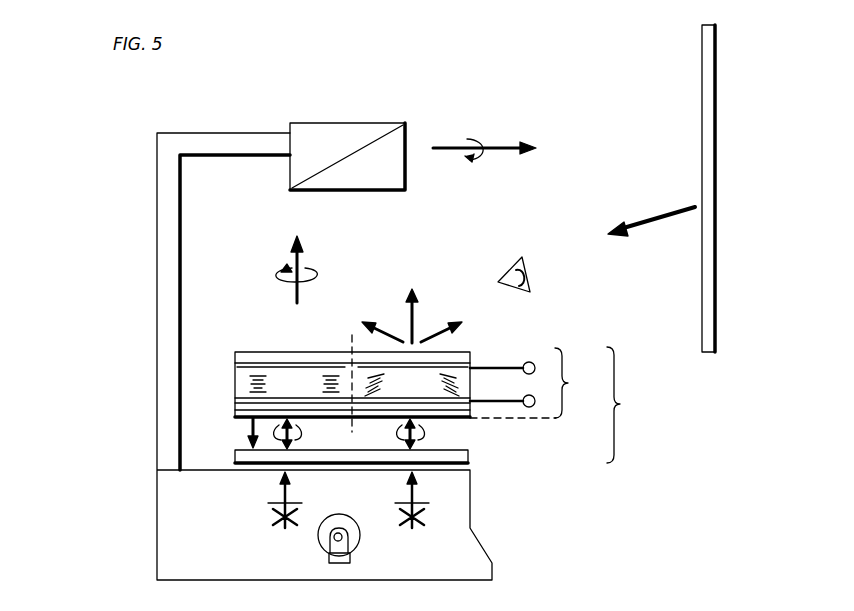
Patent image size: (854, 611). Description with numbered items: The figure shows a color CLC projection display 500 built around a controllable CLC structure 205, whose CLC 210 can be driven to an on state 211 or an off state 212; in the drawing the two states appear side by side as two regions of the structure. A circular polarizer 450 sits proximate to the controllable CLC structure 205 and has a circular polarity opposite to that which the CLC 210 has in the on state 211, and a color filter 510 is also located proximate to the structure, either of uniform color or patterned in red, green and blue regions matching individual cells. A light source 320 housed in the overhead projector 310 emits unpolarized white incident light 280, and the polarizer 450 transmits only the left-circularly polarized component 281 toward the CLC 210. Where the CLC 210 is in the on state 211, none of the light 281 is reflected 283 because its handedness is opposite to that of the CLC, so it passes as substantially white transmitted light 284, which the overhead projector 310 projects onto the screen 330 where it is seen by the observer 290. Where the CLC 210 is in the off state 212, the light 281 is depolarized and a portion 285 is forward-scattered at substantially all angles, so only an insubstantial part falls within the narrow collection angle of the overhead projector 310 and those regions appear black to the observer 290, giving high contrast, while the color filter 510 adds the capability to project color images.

The controllable CLC structure 205 is at (538, 383).
The CLC 210 is at (236, 380).
The on state 211 is at (311, 393).
The off state 212 is at (428, 393).
The incident light 280 is at (283, 490).
The transmitted component of incident light 281 is at (299, 434).
The reflected light 283 is at (251, 427).
The transmitted light 284 is at (505, 147).
The forward-scattered light 285 is at (430, 316).
The observer 290 is at (506, 278).
The overhead projector 310 is at (157, 309).
The light source 320 is at (360, 545).
The screen 330 is at (706, 354).
The circular polarizer 450 is at (471, 471).
The color CLC projection display 500 is at (634, 405).
The color filter 510 is at (478, 419).